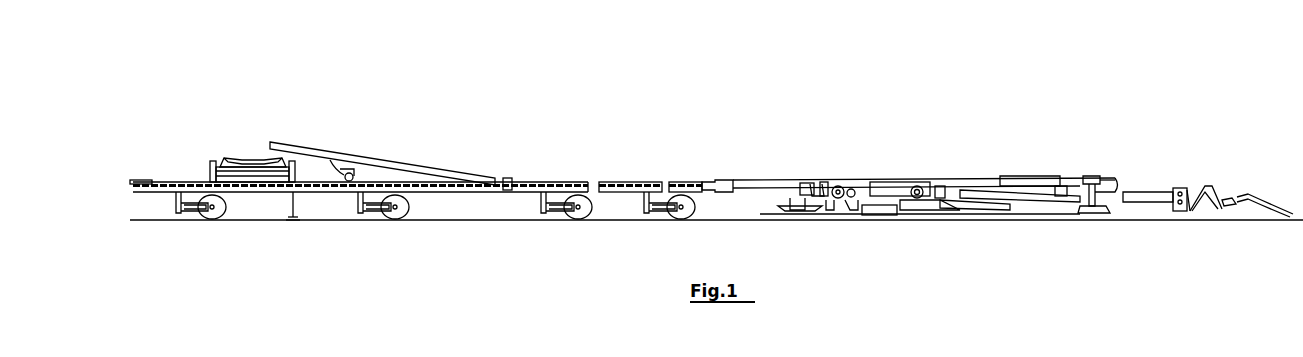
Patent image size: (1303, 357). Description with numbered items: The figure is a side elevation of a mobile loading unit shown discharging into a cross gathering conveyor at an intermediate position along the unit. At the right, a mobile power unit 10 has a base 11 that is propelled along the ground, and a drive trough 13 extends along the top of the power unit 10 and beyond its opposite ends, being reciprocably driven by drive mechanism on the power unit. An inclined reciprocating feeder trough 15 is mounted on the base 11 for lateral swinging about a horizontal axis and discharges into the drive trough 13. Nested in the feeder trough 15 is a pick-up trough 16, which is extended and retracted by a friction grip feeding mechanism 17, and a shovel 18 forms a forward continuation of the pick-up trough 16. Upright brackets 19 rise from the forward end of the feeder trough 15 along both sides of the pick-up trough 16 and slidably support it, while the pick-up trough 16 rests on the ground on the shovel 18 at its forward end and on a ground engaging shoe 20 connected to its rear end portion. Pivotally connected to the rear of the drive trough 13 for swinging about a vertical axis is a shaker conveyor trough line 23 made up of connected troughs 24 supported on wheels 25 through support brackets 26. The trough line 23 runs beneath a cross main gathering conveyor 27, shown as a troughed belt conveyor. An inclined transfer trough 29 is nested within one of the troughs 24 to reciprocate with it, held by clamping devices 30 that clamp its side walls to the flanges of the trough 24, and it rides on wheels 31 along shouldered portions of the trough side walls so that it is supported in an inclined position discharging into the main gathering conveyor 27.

The mobile power unit 10 is at (880, 216).
The base 11 is at (793, 211).
The drive trough 13 is at (888, 180).
The feeder trough 15 is at (1030, 180).
The pick-up trough 16 is at (1228, 200).
The friction grip feeding mechanism 17 is at (1211, 178).
The shovel 18 is at (1270, 206).
The upright brackets 19 is at (1178, 188).
The ground engaging shoe 20 is at (1106, 215).
The shaker conveyor trough line 23 is at (435, 195).
The troughs 24 is at (618, 182).
The wheels 25 is at (220, 216).
The support brackets 26 is at (188, 213).
The cross main gathering conveyor 27 is at (226, 158).
The transfer trough 29 is at (420, 162).
The clamping devices 30 is at (510, 178).
The wheels 31 is at (343, 173).